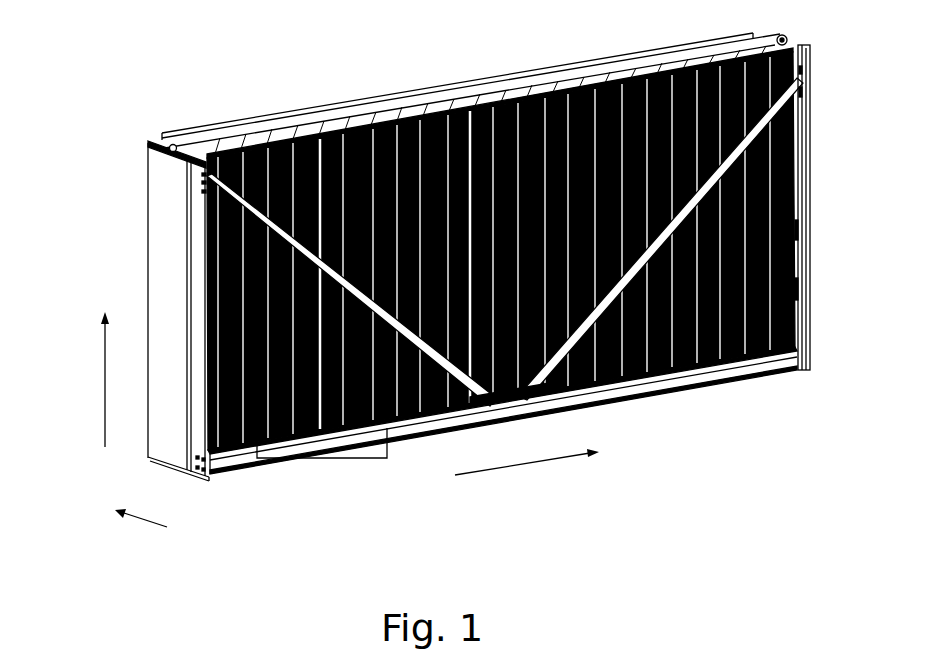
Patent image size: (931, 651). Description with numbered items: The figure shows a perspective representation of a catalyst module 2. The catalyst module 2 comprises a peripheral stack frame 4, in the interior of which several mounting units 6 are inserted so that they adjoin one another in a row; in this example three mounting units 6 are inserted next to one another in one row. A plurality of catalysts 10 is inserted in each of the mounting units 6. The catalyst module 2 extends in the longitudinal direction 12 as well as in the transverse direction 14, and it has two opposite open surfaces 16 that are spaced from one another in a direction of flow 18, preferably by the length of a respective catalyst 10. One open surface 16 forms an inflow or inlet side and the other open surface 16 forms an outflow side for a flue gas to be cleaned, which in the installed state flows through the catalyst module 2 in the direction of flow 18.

The catalyst module 2 is at (422, 290).
The peripheral stack frame 4 is at (142, 193).
The mounting unit 6 is at (528, 100).
The catalyst 10 is at (322, 437).
The longitudinal direction 12 is at (521, 466).
The transverse direction 14 is at (104, 378).
The open surface 16 is at (331, 133).
The direction of flow 18 is at (141, 521).